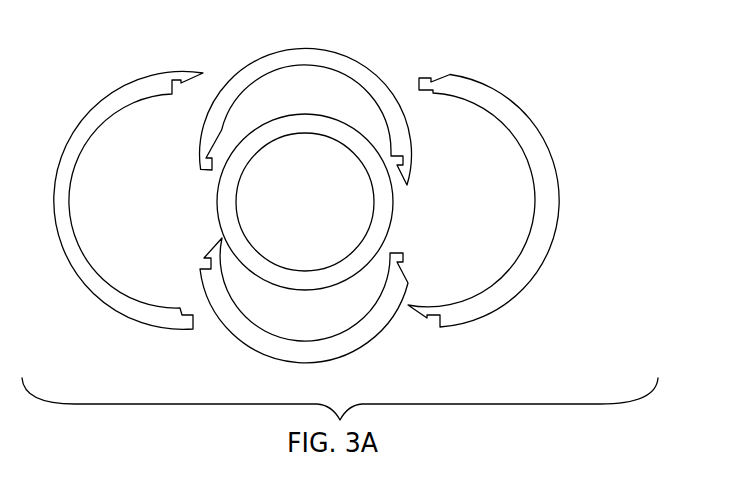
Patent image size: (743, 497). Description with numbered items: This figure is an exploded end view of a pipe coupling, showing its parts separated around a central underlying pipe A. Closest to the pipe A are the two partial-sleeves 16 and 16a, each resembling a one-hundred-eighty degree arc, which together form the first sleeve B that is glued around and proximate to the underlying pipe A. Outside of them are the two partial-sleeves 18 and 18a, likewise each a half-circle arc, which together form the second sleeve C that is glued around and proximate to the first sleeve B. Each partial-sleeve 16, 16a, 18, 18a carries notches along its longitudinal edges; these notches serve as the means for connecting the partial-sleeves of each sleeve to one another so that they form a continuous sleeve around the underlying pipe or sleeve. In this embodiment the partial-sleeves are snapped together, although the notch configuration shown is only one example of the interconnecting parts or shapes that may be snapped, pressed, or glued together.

The pipe A is at (386, 211).
The first sleeve B is at (310, 96).
The second sleeve C is at (506, 210).
The partial-sleeve 16 is at (258, 342).
The partial-sleeve 16a is at (337, 53).
The partial-sleeve 18 is at (132, 88).
The partial-sleeve 18a is at (473, 313).